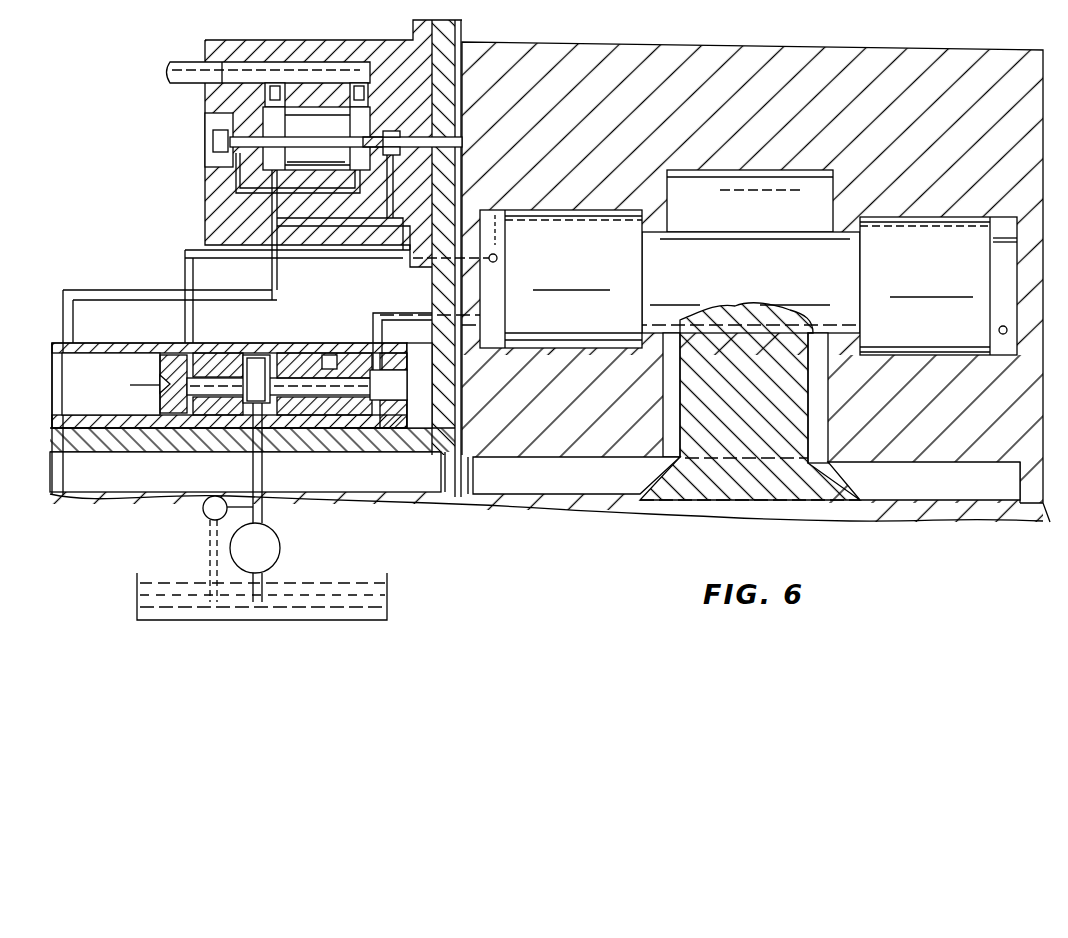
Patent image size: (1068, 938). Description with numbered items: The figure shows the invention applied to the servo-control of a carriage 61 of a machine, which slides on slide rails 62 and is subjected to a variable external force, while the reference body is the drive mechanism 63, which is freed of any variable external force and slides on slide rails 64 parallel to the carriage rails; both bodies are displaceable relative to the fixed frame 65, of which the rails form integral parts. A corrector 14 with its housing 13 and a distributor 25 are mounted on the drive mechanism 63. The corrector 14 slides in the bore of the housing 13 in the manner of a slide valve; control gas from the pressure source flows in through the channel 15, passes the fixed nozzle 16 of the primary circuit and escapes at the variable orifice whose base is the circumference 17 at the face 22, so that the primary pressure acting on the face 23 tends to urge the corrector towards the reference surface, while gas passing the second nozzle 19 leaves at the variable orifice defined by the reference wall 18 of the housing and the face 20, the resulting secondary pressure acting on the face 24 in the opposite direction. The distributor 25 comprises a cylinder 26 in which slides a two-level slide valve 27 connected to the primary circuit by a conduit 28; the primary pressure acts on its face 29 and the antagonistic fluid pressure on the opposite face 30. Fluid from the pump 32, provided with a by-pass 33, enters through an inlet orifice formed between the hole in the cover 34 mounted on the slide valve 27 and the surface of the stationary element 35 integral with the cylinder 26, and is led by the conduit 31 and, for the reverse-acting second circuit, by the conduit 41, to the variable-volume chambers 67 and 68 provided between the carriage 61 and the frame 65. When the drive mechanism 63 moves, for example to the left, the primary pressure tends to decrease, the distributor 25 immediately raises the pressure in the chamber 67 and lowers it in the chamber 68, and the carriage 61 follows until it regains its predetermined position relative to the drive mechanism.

The housing 13 is at (205, 220).
The corrector 14 is at (333, 140).
The channel 15 is at (196, 84).
The nozzle 16 is at (275, 85).
The circumference 17 is at (466, 147).
The reference wall 18 is at (212, 134).
The nozzle 19 is at (360, 85).
The face of the corrector 20 is at (234, 160).
The face of the corrector 22 is at (463, 130).
The face of the corrector 23 is at (316, 153).
The face of the corrector 24 is at (387, 133).
The distributor 25 is at (62, 374).
The cylinder 26 is at (219, 353).
The slide valve 27 is at (229, 385).
The conduit 28 is at (170, 256).
The face of the slide valve 29 is at (73, 419).
The face of the slide valve 30 is at (388, 390).
The conduit 31 is at (253, 354).
The pump 32 is at (255, 548).
The by-pass 33 is at (206, 514).
The cover 34 is at (290, 353).
The stationary element 35 is at (256, 446).
The conduit 41 is at (186, 326).
The carriage 61 is at (703, 58).
The slide rails 62 is at (746, 478).
The drive mechanism 63 is at (433, 291).
The slide rails 64 is at (259, 461).
The frame 65 is at (760, 335).
The variable-volume chamber 67 is at (509, 247).
The variable-volume chamber 68 is at (998, 243).